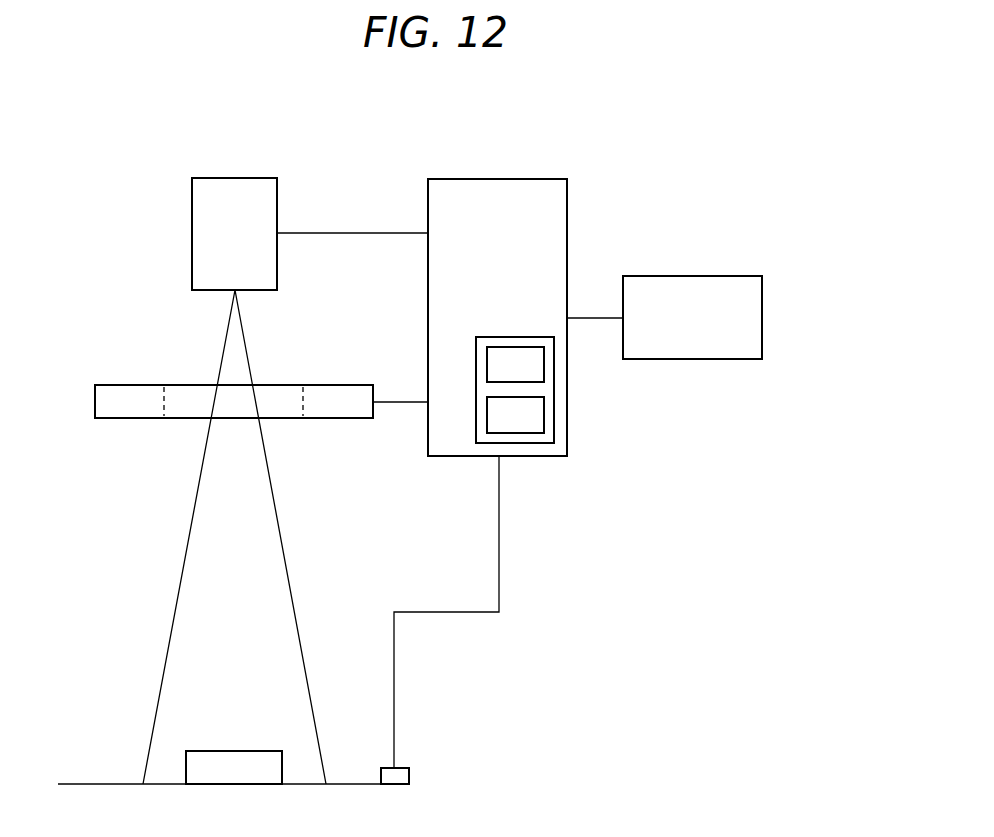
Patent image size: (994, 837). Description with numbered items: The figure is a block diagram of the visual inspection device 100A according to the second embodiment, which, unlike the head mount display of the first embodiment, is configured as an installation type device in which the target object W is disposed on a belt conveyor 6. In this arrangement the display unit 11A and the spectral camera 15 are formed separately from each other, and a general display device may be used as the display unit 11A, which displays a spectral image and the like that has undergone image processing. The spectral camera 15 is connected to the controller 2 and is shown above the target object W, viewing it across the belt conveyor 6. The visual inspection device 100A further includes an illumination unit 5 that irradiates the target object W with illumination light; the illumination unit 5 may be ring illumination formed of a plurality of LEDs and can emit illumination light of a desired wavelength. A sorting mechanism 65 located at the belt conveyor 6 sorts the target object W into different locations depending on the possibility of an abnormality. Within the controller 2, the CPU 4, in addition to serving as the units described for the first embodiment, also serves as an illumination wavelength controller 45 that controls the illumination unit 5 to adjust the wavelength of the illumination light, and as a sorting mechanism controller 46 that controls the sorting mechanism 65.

The visual inspection device 100A is at (737, 145).
The spectral camera 15 is at (257, 177).
The controller 2 is at (548, 178).
The CPU 4 is at (500, 336).
The illumination wavelength controller 45 is at (544, 364).
The sorting mechanism controller 46 is at (544, 413).
The display unit 11A is at (733, 276).
The illumination unit 5 is at (108, 385).
The belt conveyor 6 is at (78, 783).
The target object W is at (231, 750).
The sorting mechanism 65 is at (409, 774).